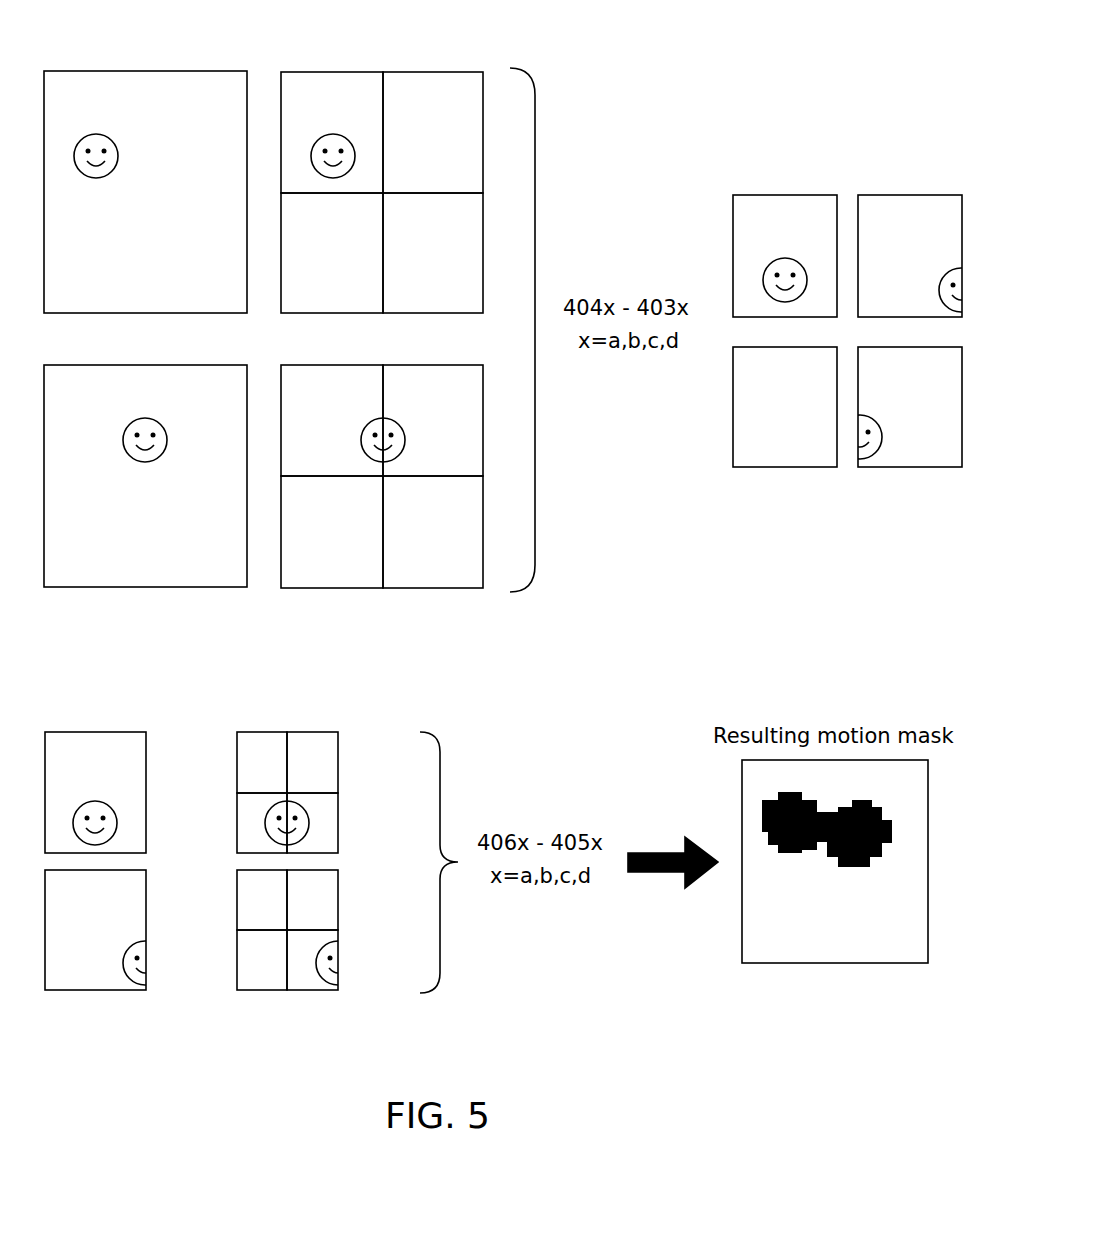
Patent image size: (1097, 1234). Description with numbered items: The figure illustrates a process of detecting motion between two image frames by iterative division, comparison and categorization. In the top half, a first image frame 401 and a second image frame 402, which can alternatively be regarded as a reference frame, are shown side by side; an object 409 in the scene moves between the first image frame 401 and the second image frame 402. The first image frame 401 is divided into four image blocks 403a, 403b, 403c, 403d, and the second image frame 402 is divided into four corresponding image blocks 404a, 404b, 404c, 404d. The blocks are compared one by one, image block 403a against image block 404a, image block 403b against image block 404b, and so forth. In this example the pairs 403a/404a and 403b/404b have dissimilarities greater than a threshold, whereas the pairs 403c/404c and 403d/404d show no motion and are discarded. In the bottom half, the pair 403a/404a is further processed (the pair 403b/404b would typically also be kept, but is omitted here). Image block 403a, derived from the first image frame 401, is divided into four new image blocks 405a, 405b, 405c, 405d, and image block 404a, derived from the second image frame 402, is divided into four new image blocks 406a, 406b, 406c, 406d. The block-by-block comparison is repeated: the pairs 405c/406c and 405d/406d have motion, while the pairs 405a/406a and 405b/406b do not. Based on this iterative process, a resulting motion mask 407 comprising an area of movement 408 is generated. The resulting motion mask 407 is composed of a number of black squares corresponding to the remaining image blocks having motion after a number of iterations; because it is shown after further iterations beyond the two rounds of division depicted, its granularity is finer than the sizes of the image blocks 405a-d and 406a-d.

The first image frame 401 is at (206, 87).
The second image frame 402 is at (145, 573).
The image block 403a is at (360, 113).
The image block 403b is at (461, 151).
The image block 403c is at (358, 266).
The image block 403d is at (461, 266).
The corresponding image block 404a is at (360, 408).
The corresponding image block 404b is at (461, 408).
The corresponding image block 404c is at (358, 544).
The corresponding image block 404d is at (461, 544).
The new image block 405a is at (248, 745).
The new image block 405b is at (322, 745).
The new image block 405c is at (248, 823).
The new image block 405d is at (338, 823).
The new image block 406a is at (248, 900).
The new image block 406b is at (338, 900).
The new image block 406c is at (248, 977).
The new image block 406d is at (303, 977).
The resulting motion mask 407 is at (835, 930).
The area of movement 408 is at (762, 805).
The object 409 is at (105, 113).